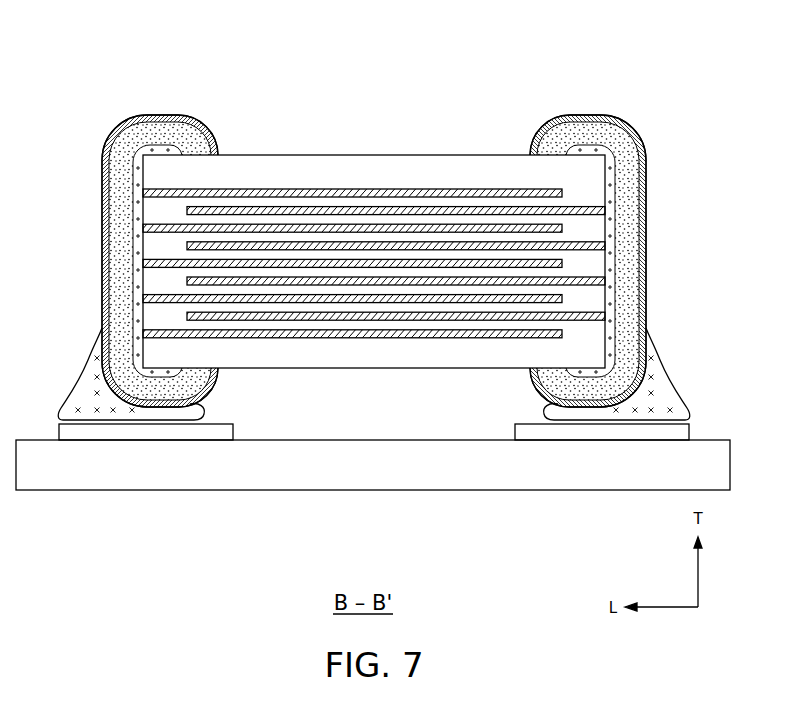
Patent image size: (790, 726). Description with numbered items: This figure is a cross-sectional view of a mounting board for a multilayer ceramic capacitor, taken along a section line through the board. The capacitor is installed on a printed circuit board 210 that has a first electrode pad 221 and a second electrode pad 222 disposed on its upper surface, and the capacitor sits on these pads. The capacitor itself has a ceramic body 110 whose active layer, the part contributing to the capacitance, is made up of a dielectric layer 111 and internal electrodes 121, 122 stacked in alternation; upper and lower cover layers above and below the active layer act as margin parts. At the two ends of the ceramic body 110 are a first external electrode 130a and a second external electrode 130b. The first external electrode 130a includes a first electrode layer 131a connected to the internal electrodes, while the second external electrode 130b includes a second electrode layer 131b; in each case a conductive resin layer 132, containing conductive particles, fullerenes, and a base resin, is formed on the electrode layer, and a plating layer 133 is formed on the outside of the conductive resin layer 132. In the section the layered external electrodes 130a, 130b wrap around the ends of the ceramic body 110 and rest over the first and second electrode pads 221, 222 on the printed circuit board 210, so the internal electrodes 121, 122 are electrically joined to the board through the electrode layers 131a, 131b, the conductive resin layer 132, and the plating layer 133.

The ceramic body 110 is at (421, 157).
The dielectric layer 111 is at (280, 203).
The internal electrode 121 is at (331, 189).
The internal electrode 122 is at (386, 211).
The first external electrode 130a is at (82, 66).
The second external electrode 130b is at (518, 66).
The first electrode layer 131a is at (186, 151).
The second electrode layer 131b is at (561, 151).
The conductive resin layer 132 is at (157, 127).
The plating layer 133 is at (108, 131).
The printed circuit board 210 is at (370, 461).
The first electrode pad 221 is at (169, 431).
The second electrode pad 222 is at (595, 432).